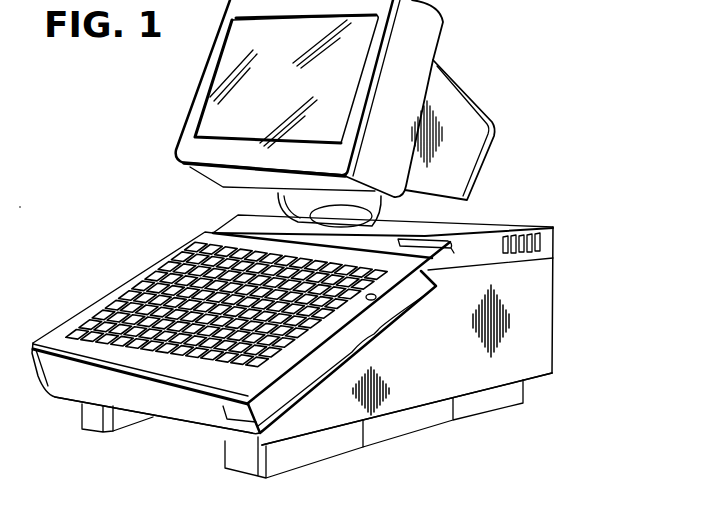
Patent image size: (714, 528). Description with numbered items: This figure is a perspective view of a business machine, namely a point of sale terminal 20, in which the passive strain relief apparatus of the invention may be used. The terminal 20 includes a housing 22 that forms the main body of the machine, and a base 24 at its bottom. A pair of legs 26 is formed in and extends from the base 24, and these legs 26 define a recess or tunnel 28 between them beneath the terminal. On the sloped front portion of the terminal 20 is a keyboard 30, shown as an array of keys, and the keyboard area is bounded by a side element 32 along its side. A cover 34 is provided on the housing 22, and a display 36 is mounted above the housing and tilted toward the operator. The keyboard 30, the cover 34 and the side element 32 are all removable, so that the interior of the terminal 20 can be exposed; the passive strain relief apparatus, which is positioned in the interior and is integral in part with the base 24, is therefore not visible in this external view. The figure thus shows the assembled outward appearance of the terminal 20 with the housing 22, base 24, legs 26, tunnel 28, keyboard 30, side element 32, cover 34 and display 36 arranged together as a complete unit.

The point of sale terminal 20 is at (522, 208).
The housing 22 is at (547, 308).
The base 24 is at (182, 430).
The legs 26 is at (78, 415).
The recess or tunnel 28 is at (208, 440).
The keyboard 30 is at (178, 274).
The side element 32 is at (286, 403).
The cover 34 is at (553, 240).
The display 36 is at (467, 97).